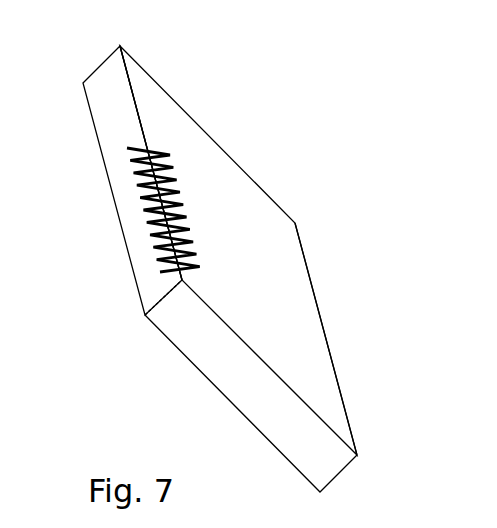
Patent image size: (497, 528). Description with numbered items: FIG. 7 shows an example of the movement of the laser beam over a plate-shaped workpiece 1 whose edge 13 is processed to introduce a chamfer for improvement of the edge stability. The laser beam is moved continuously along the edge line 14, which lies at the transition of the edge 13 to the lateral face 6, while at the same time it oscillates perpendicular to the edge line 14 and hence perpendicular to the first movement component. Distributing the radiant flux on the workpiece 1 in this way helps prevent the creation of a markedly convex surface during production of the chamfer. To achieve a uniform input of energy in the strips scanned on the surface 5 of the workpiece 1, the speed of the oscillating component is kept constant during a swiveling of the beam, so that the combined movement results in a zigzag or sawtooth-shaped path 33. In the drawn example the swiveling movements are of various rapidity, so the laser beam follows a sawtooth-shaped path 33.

The workpiece 1 is at (248, 257).
The surface 5 is at (259, 212).
The lateral face 6 is at (285, 271).
The edge 13 is at (114, 109).
The edge line 14 is at (125, 67).
The path 33 is at (177, 148).